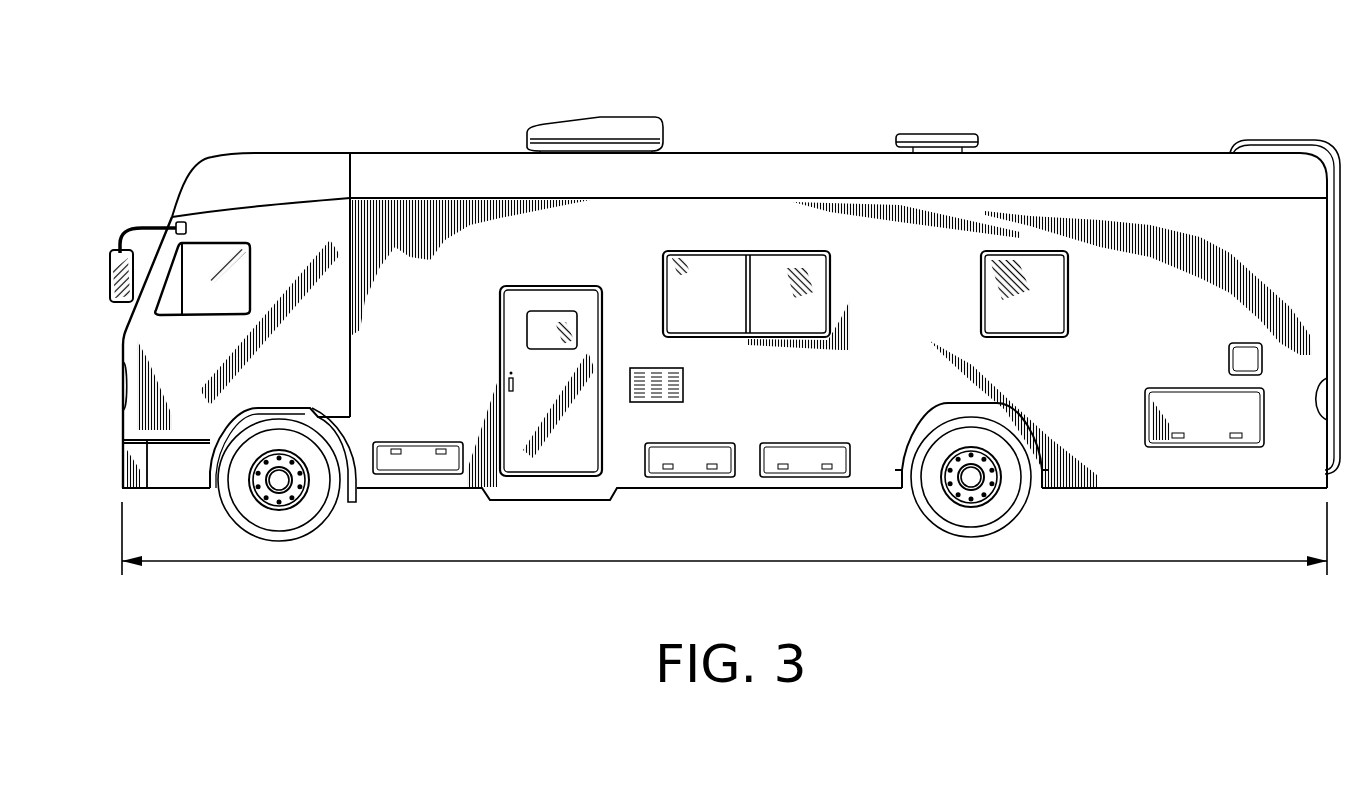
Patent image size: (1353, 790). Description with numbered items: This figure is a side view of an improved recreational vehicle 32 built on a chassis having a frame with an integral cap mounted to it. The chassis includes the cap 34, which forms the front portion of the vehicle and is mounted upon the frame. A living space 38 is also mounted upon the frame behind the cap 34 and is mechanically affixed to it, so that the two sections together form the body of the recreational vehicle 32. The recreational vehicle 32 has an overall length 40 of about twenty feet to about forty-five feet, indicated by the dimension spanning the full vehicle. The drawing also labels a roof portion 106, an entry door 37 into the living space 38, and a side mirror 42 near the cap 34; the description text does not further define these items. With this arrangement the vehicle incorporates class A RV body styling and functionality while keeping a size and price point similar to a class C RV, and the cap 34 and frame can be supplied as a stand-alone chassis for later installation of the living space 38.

The recreational vehicle 32 is at (706, 349).
The roof cap 106 is at (220, 178).
The cap 34 is at (303, 218).
The living space 38 is at (738, 217).
The entry door 37 is at (575, 447).
The overall length 40 is at (992, 561).
The side mirror 42 is at (150, 260).